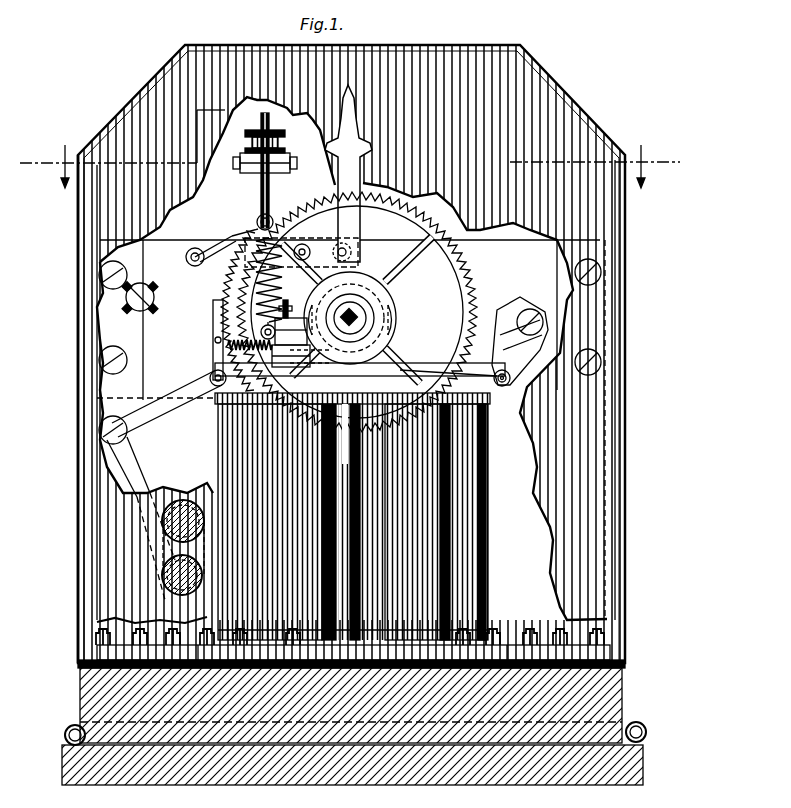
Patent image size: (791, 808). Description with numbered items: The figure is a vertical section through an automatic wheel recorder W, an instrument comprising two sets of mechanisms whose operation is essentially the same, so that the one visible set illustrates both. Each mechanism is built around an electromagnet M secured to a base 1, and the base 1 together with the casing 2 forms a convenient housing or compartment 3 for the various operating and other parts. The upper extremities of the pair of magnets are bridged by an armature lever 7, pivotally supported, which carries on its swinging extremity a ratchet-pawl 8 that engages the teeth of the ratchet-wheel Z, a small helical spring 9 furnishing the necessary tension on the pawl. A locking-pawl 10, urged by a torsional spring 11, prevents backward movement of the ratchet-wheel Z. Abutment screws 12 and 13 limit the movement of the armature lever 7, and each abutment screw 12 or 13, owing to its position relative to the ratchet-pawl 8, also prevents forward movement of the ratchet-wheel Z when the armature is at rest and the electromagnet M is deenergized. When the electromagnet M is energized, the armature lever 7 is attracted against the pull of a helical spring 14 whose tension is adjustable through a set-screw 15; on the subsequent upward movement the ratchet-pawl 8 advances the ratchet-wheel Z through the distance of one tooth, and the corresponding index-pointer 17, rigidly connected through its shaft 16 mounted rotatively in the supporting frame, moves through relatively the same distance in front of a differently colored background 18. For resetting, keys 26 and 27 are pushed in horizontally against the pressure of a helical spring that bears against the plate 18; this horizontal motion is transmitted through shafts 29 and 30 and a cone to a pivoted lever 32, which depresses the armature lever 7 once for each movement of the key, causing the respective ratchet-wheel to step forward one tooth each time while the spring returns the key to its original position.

The base 1 is at (645, 770).
The casing 2 is at (625, 652).
The housing or compartment 3 is at (356, 356).
The armature lever 7 is at (381, 341).
The ratchet-pawl 8 is at (212, 340).
The helical spring 9 is at (260, 340).
The locking-pawl 10 is at (252, 236).
The torsional spring 11 is at (192, 256).
The abutment screw 12 is at (168, 292).
The abutment screw 13 is at (301, 327).
The helical spring 14 is at (282, 232).
The set-screw 15 is at (265, 170).
The shaft 16 is at (352, 312).
The index-pointer 17 is at (348, 173).
The background 18 is at (351, 354).
The resetting key 26 is at (162, 587).
The resetting key 27 is at (190, 500).
The shaft 29 is at (160, 567).
The shaft 30 is at (178, 500).
The lever 32 is at (182, 394).
The electromagnet M is at (218, 437).
The ratchet-wheel Z is at (466, 282).
The automatic wheel recorder W is at (78, 604).